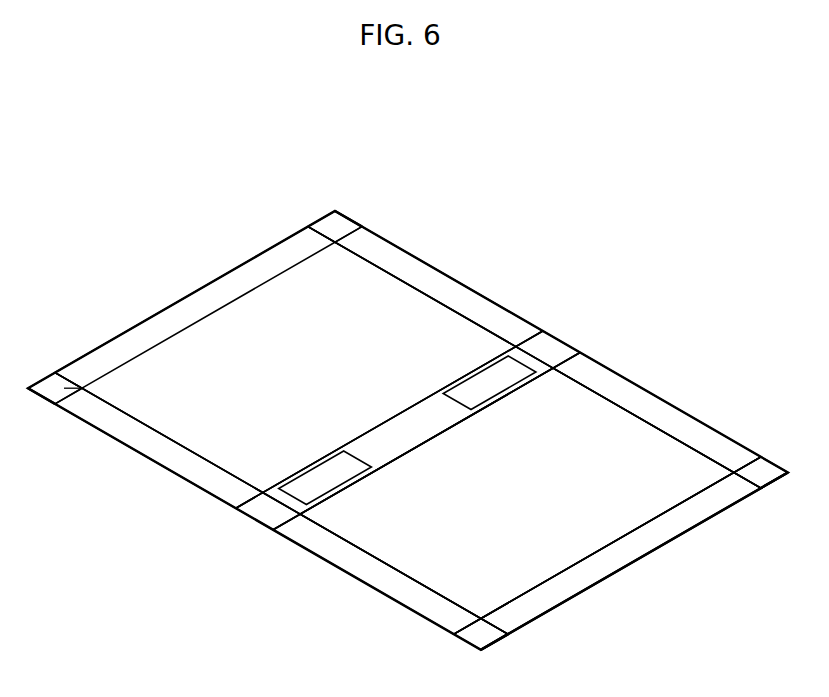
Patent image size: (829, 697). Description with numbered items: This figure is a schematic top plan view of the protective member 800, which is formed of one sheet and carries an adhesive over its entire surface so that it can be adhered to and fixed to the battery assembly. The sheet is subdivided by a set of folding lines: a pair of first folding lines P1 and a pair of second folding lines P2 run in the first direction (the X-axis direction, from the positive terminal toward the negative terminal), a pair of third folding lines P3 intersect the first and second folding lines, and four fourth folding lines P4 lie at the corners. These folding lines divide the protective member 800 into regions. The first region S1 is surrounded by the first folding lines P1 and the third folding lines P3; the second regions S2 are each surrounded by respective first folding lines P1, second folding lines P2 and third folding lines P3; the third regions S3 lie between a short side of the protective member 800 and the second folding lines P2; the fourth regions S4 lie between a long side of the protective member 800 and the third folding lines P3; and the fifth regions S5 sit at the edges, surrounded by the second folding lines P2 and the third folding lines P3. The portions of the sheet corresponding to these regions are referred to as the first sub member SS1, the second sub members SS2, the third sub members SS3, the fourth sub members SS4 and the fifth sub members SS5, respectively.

The protective member 800 is at (440, 232).
The first sub member SS1 is at (563, 345).
The second sub member SS2 is at (692, 418).
The third sub member SS3 is at (663, 533).
The fourth sub member SS4 is at (452, 295).
The fifth sub member SS5 is at (334, 224).
The first folding line P1 is at (408, 412).
The second folding line P2 is at (617, 542).
The third folding line P3 is at (640, 418).
The fourth folding line P4 is at (333, 241).
The first region S1 is at (466, 419).
The second region S2 is at (362, 435).
The third region S3 is at (593, 557).
The fourth region S4 is at (590, 387).
The fifth region S5 is at (350, 222).